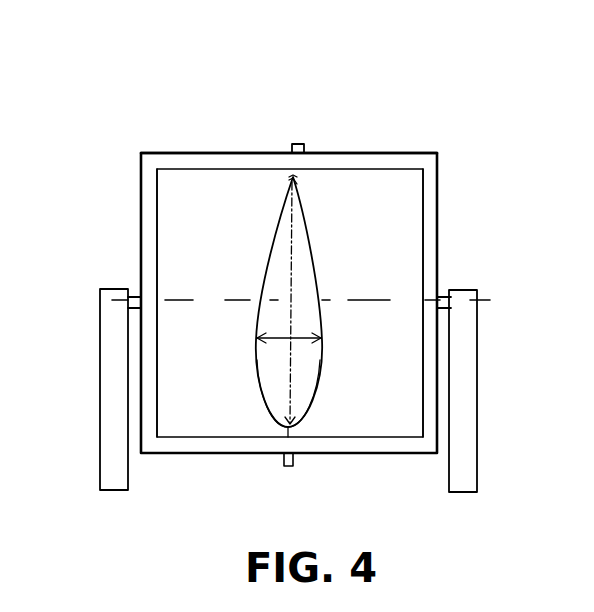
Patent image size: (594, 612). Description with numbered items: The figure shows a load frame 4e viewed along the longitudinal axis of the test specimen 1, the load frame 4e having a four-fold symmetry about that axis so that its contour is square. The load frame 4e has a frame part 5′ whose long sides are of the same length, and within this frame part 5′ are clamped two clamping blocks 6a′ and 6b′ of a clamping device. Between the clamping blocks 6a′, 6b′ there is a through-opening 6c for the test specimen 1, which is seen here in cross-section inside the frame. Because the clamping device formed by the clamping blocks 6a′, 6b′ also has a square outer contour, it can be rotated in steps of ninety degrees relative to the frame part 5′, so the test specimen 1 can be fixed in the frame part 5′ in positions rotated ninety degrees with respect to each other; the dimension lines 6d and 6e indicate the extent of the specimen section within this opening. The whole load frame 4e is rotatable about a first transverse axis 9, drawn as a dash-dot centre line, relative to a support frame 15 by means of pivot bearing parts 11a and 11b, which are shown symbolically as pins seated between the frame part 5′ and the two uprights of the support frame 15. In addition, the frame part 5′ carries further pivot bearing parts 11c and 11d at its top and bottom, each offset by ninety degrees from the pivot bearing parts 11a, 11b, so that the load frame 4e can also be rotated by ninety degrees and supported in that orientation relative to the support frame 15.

The test specimen 1 is at (318, 268).
The load frame 4e is at (380, 140).
The frame part 5′ is at (263, 153).
The clamping block 6a′ is at (398, 196).
The clamping block 6b′ is at (167, 235).
The through-opening 6c is at (310, 384).
The tip of body 6d is at (293, 238).
The width of body 6e is at (280, 342).
The first transverse axis 9 is at (508, 300).
The pivot bearing part 11a is at (438, 296).
The pivot bearing part 11b is at (133, 292).
The pivot bearing part 11c is at (303, 143).
The pivot bearing part 11d is at (281, 468).
The support frame 15 is at (483, 403).